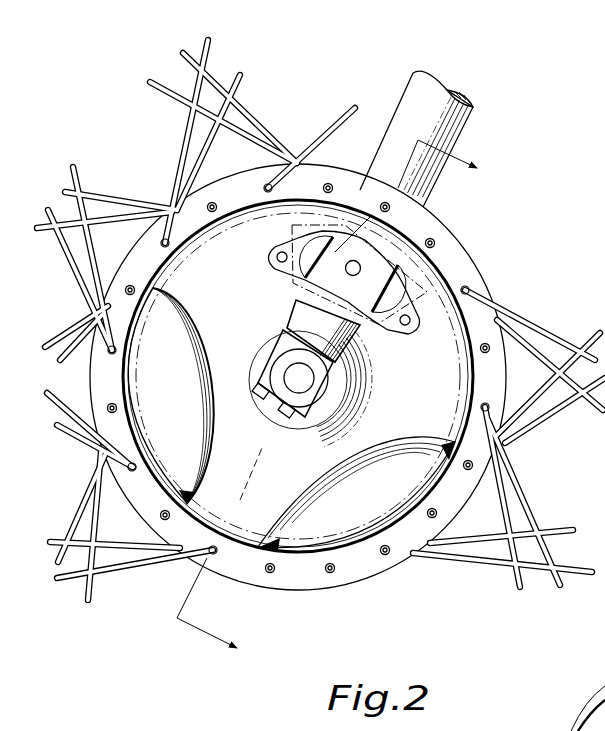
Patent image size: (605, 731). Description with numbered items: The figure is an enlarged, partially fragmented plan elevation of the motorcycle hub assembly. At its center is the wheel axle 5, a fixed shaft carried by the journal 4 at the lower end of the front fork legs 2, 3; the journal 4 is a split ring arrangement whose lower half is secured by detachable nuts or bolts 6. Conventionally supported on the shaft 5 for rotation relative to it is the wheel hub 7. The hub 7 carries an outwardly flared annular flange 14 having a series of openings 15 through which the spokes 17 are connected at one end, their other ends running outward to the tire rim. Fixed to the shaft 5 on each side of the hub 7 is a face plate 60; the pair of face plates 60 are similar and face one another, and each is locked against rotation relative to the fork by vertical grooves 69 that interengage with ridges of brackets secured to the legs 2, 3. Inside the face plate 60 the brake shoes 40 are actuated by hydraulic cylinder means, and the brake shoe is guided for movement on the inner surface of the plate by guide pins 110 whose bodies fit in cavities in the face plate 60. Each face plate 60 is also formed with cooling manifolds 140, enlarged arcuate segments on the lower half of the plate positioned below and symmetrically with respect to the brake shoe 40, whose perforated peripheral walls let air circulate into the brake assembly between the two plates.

The leg 2 is at (417, 98).
The leg 3 is at (335, 403).
The journal 4 is at (270, 257).
The wheel axle 5 is at (299, 378).
The nuts or bolts 6 is at (258, 388).
The wheel hub 7 is at (297, 578).
The annular flange 14 is at (482, 262).
The openings 15 is at (436, 246).
The spokes 17 is at (253, 113).
The brake shoes 40 is at (279, 231).
The face plates 60 is at (196, 379).
The vertical grooves 69 is at (380, 262).
The guide pins 110 is at (603, 686).
The cooling manifolds 140 is at (370, 497).